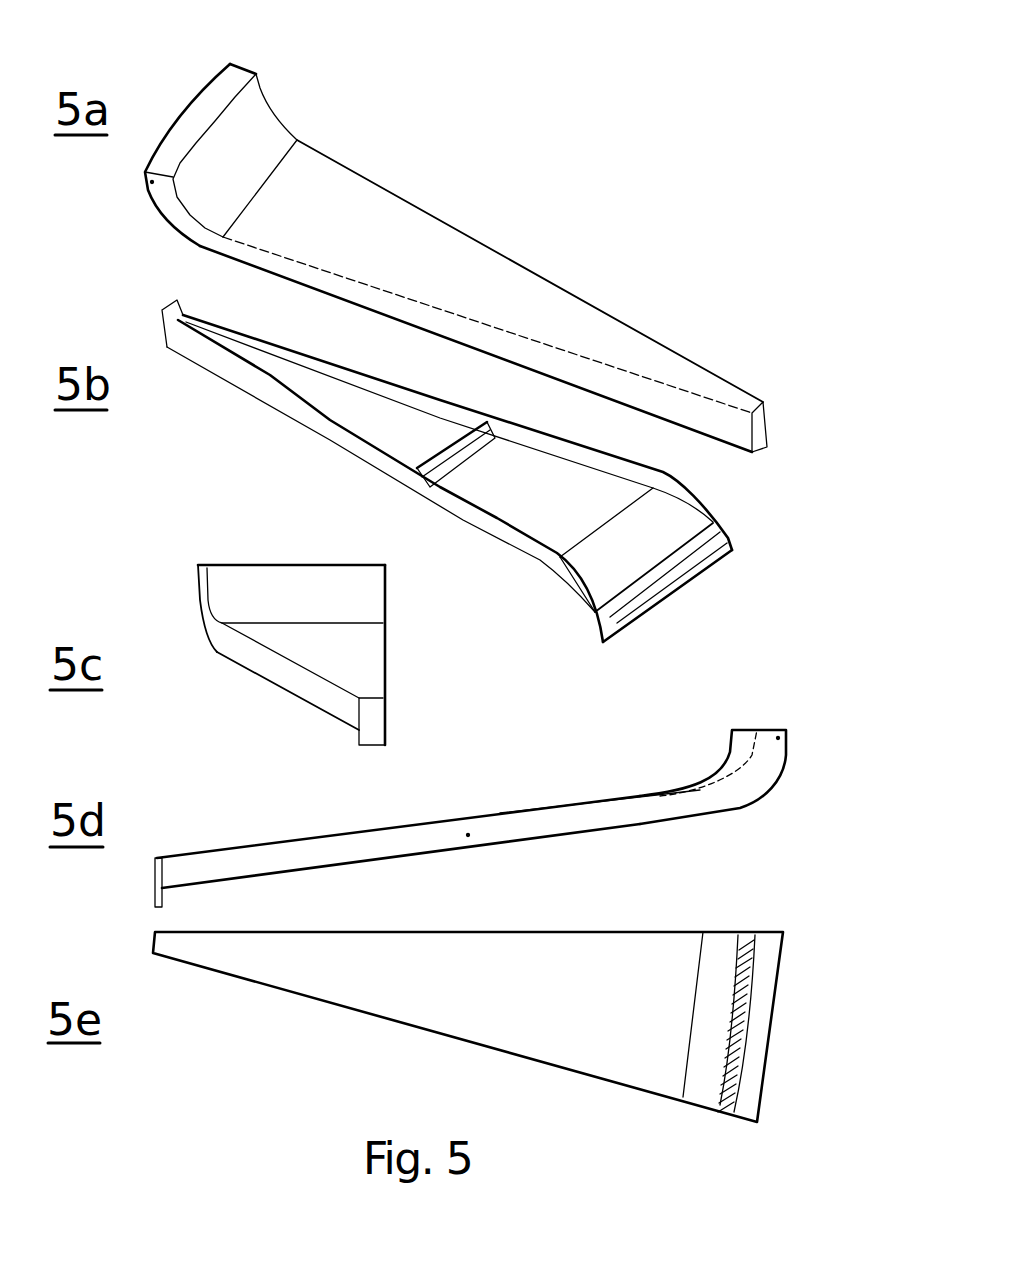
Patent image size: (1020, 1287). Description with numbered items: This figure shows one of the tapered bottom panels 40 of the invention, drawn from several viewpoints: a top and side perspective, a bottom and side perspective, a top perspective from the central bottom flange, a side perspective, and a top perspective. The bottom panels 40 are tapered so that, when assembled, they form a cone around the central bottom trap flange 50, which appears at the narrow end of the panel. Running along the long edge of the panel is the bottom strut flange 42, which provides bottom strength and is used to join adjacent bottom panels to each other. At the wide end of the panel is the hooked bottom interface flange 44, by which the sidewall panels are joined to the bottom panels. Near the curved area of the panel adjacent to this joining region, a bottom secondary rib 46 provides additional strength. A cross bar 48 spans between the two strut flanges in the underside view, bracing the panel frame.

The bottom panel 40 is at (486, 202).
The bottom strut flange 42 is at (591, 297).
The bottom interface flange 44 is at (232, 76).
The bottom secondary rib 46 is at (609, 583).
The cross bar 48 is at (458, 470).
The central bottom trap flange 50 is at (771, 415).